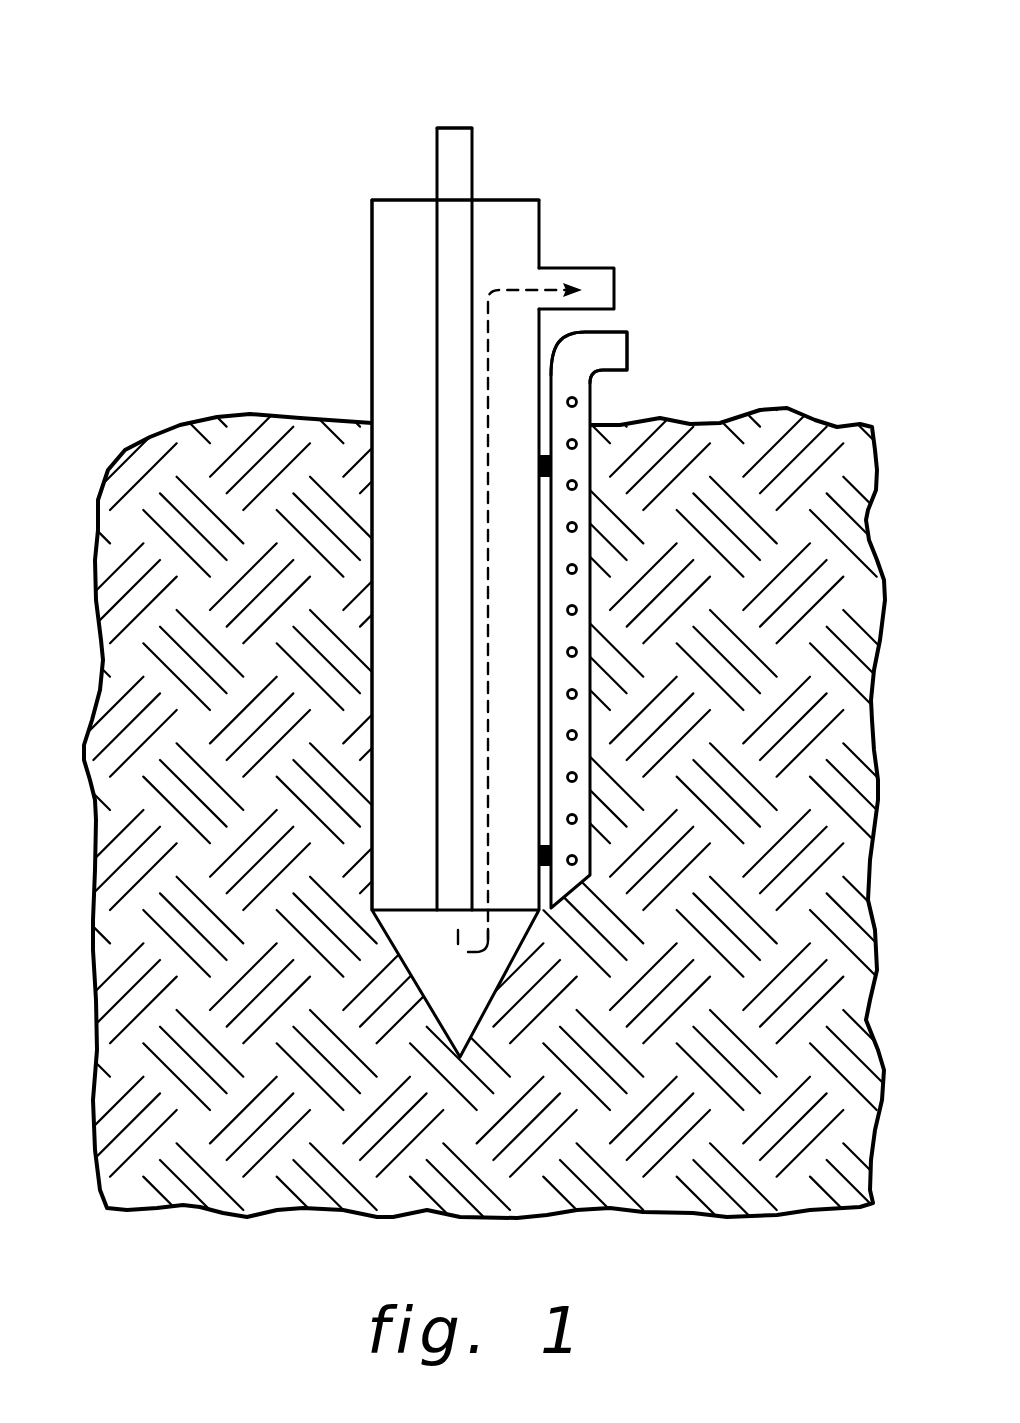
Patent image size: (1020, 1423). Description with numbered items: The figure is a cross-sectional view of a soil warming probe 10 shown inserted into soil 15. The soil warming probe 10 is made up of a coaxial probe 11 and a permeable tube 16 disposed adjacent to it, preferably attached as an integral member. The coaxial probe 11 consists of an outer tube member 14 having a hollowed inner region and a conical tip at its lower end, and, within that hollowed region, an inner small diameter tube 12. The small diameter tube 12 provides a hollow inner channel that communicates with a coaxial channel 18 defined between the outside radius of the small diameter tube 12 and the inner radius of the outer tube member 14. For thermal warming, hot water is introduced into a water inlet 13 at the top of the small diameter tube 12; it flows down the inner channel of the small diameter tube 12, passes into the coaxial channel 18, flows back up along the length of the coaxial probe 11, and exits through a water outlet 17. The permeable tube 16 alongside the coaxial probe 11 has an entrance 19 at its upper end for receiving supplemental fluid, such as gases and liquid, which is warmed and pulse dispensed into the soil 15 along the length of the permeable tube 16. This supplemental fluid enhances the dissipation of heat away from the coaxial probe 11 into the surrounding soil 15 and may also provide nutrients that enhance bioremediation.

The soil warming probe 10 is at (510, 532).
The coaxial probe 11 is at (371, 258).
The small diameter tube 12 is at (473, 148).
The water inlet 13 is at (453, 101).
The outer tube member 14 is at (370, 200).
The soil 15 is at (163, 473).
The permeable tube 16 is at (592, 398).
The water outlet 17 is at (627, 287).
The coaxial channel 18 is at (387, 340).
The entrance 19 is at (660, 348).